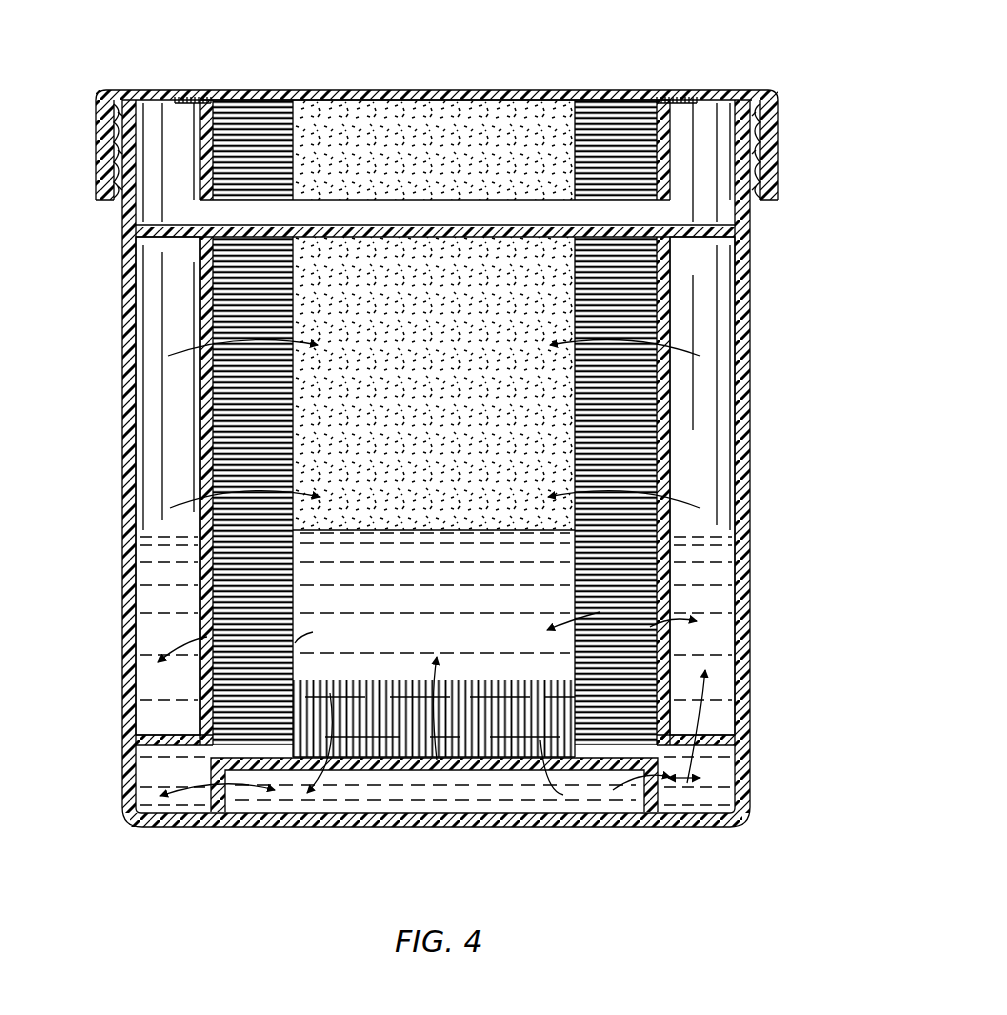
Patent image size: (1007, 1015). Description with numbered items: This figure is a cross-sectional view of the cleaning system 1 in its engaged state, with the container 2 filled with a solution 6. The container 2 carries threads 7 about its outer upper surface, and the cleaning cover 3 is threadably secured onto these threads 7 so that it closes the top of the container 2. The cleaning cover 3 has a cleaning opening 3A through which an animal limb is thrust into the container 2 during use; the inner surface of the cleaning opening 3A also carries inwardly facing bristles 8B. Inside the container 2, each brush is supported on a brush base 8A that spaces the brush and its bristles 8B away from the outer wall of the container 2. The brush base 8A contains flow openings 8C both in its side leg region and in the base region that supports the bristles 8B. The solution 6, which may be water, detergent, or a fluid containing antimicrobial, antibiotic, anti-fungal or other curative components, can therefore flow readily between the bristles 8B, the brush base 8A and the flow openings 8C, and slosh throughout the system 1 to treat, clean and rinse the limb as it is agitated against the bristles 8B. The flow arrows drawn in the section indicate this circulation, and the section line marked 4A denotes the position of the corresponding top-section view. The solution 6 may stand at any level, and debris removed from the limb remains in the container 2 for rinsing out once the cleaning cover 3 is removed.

The cleaning system 1 is at (186, 60).
The container 2 is at (122, 286).
The cleaning cover 3 is at (96, 118).
The cleaning opening 3A is at (662, 93).
The section line 4A is at (110, 487).
The solution 6 is at (718, 530).
The threads 7 is at (781, 148).
The brush base 8A is at (672, 148).
The bristles 8B is at (308, 90).
The flow openings 8C is at (640, 352).